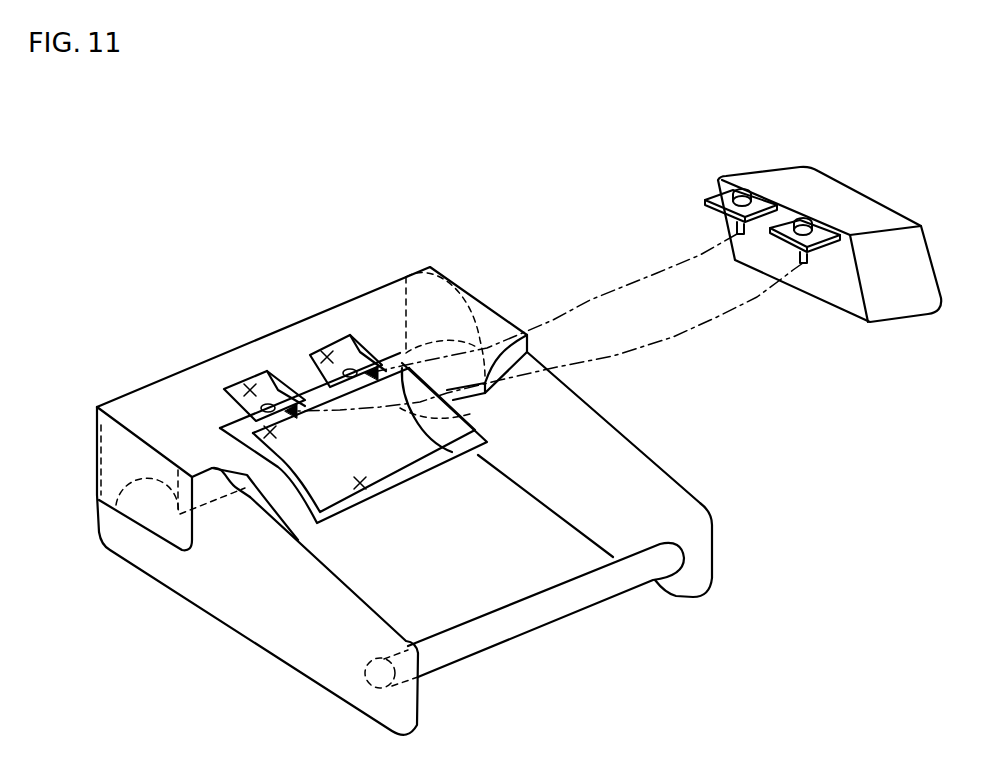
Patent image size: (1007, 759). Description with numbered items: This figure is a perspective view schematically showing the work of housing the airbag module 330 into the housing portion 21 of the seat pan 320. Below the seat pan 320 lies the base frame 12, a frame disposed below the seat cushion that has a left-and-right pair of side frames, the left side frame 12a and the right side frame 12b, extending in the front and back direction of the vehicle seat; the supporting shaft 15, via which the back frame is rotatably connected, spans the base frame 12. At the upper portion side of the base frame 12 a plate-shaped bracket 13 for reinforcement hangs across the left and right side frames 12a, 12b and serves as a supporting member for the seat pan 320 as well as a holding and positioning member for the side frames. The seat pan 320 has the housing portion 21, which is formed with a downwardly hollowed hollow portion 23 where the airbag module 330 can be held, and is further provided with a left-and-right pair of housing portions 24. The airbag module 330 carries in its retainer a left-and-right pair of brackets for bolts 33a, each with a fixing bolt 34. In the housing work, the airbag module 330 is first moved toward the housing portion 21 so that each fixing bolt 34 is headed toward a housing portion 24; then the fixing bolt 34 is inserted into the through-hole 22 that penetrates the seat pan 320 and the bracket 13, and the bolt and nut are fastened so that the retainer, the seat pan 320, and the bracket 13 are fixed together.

The base frame 12 is at (272, 651).
The left side frame 12a is at (217, 590).
The right side frame 12b is at (653, 508).
The bracket 13 is at (215, 447).
The supporting shaft 15 is at (573, 595).
The seat pan 320 is at (395, 282).
The housing portion 21 is at (222, 420).
The through-hole 22 is at (268, 402).
The hollow portion 23 is at (363, 492).
The housing portions 24 is at (327, 352).
The airbag module 330 is at (773, 172).
The brackets for bolts 33a is at (765, 195).
The fixing bolt 34 is at (737, 237).